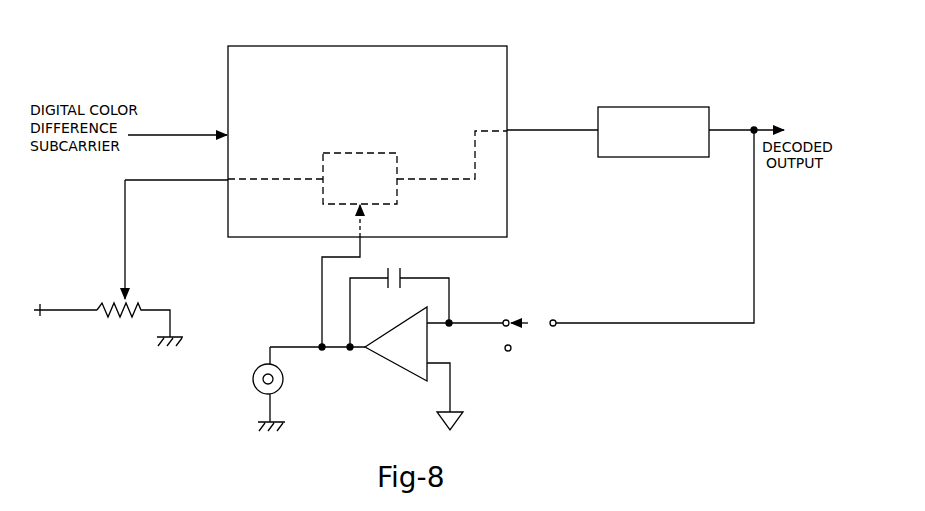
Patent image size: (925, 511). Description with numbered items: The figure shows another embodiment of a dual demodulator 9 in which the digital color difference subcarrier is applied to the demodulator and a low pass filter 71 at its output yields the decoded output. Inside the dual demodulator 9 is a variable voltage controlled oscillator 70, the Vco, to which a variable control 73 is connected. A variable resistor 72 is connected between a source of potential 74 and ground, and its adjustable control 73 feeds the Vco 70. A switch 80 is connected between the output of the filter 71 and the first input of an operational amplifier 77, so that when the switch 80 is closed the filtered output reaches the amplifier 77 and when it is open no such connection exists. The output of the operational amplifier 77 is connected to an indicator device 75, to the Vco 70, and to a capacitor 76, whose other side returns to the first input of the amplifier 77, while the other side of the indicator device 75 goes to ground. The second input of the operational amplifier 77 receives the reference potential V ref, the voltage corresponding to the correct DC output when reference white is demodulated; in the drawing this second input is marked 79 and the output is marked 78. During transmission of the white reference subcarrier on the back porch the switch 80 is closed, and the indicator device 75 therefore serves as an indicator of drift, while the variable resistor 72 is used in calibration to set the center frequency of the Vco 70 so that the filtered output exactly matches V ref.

The dual demodulator 9 is at (376, 46).
The variable voltage controlled oscillator 70 is at (361, 153).
The low pass filter 71 is at (648, 107).
The variable resistor 72 is at (111, 315).
The variable control 73 is at (129, 291).
The source of potential 74 is at (41, 308).
The indicator device 75 is at (252, 383).
The capacitor 76 is at (387, 285).
The operational amplifier 77 is at (391, 361).
The amplifier output 78 is at (429, 323).
The reference input 79 is at (428, 362).
The switch 80 is at (541, 327).